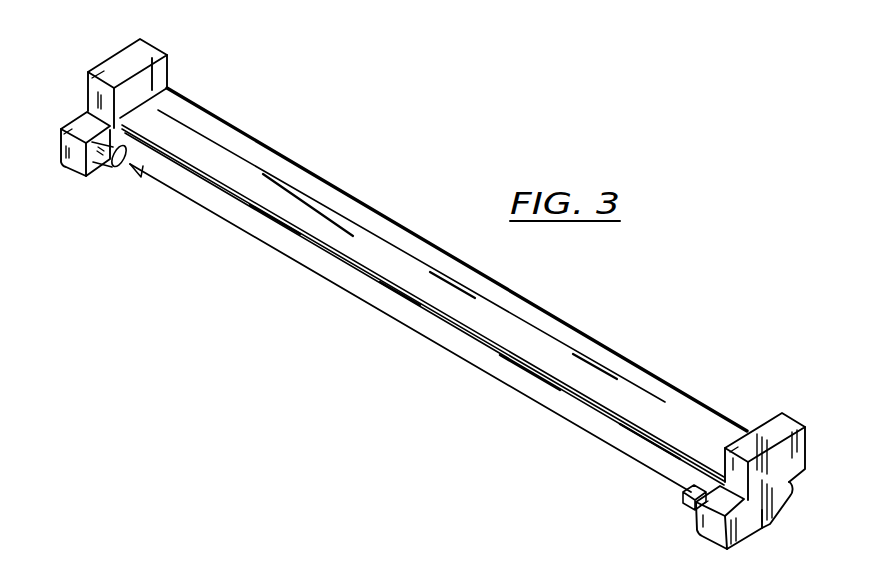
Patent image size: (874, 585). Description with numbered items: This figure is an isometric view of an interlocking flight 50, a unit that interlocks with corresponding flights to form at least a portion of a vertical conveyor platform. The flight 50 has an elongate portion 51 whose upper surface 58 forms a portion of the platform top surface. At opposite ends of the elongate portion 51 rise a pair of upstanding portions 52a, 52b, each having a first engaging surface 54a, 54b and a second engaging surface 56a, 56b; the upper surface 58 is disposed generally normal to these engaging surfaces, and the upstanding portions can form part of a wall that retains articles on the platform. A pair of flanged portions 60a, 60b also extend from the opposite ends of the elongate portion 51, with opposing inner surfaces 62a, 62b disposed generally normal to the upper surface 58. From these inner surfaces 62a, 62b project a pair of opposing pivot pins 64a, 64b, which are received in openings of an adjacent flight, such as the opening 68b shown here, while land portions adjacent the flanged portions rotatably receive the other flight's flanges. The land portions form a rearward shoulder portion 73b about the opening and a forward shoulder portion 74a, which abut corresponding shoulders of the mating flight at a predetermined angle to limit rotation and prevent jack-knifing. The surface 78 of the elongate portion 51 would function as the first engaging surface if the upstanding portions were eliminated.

The flight 50 is at (711, 283).
The elongate portion 51 is at (428, 312).
The upstanding portion 52a is at (142, 77).
The upstanding portion 52b is at (797, 435).
The first engaging surface 54a is at (91, 95).
The first engaging surface 54b is at (731, 497).
The second engaging surface 56a is at (158, 50).
The second engaging surface 56b is at (805, 425).
The upper surface 58 is at (328, 198).
The flanged portion 60a is at (75, 165).
The flanged portion 60b is at (715, 527).
The inner surface 62a is at (92, 172).
The inner surface 62b is at (697, 517).
The pivot pin 64a is at (117, 168).
The pivot pin 64b is at (692, 495).
The opening 68b is at (788, 494).
The rearward shoulder portion 73b is at (790, 486).
The forward shoulder portion 74a is at (137, 172).
The surface 78 is at (358, 285).